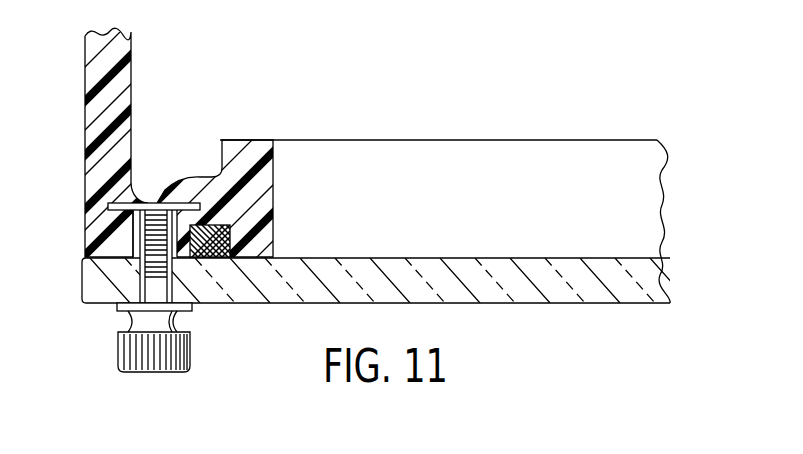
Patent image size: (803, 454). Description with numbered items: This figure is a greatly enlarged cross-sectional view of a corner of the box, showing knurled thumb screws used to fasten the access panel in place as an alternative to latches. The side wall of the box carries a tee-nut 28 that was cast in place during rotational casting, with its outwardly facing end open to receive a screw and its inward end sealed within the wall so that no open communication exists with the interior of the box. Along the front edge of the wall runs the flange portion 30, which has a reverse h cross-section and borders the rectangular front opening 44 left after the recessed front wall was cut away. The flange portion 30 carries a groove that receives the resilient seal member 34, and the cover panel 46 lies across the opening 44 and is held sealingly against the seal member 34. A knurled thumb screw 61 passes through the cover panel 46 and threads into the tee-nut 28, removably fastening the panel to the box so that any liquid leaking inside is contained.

The tee-nut 28 is at (122, 200).
The flange portion 30 is at (208, 172).
The opening 44 is at (273, 217).
The cover panel 46 is at (510, 305).
The resilient seal member 34 is at (208, 306).
The knurled thumb screw 61 is at (118, 354).